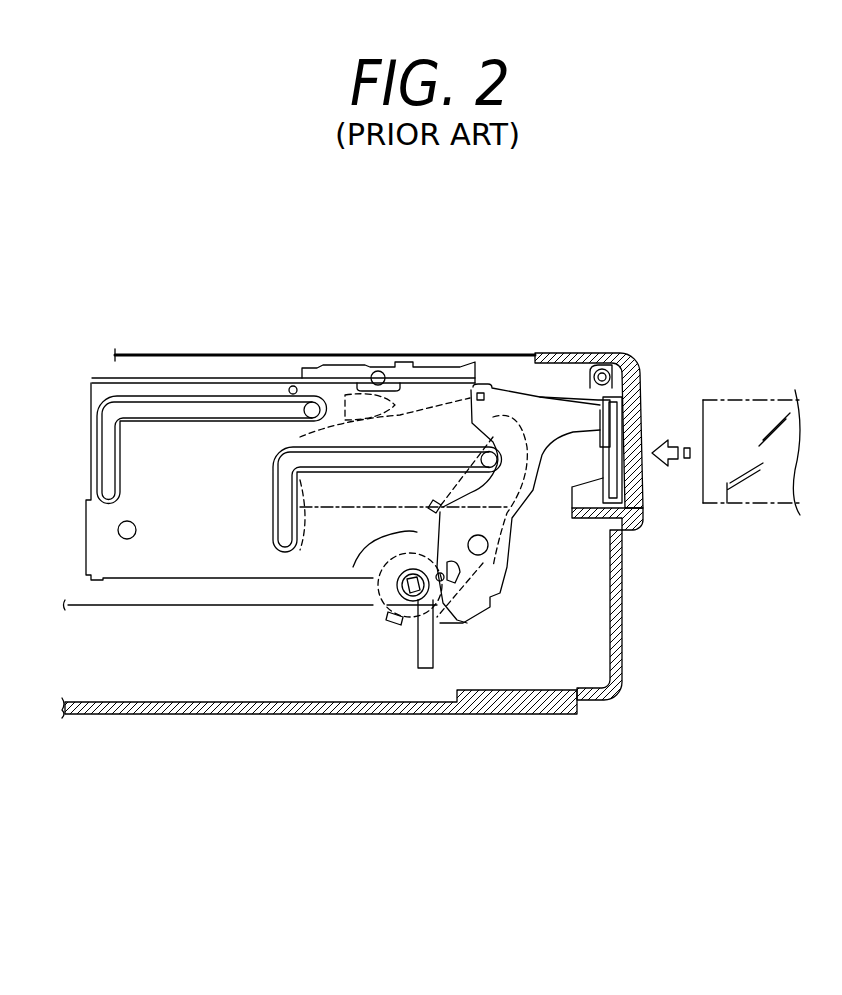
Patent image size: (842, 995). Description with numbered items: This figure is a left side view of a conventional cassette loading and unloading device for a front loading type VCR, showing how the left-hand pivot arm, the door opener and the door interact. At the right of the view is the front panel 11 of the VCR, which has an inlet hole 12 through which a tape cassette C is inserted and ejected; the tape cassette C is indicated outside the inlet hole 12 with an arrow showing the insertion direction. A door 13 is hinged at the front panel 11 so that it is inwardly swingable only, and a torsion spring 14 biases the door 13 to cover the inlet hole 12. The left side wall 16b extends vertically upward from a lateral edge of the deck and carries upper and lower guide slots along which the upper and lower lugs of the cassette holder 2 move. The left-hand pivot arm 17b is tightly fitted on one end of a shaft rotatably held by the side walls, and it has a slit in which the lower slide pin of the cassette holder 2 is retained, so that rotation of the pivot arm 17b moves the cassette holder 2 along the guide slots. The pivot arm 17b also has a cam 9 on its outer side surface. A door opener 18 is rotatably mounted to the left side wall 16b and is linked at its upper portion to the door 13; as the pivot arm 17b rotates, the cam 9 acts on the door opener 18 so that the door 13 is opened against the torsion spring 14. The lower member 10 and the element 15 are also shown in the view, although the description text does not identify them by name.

The side wall 16b is at (83, 410).
The cassette holder 2 is at (425, 395).
The engaging member 15 is at (558, 355).
The torsion spring 14 is at (604, 368).
The door 13 is at (625, 403).
The tape cassette C is at (735, 400).
The inlet hole 12 is at (636, 487).
The front panel 11 is at (617, 653).
The base plate 10 is at (137, 710).
The pivot arm 17b is at (353, 567).
The cam 9 is at (400, 625).
The door opener 18 is at (453, 615).